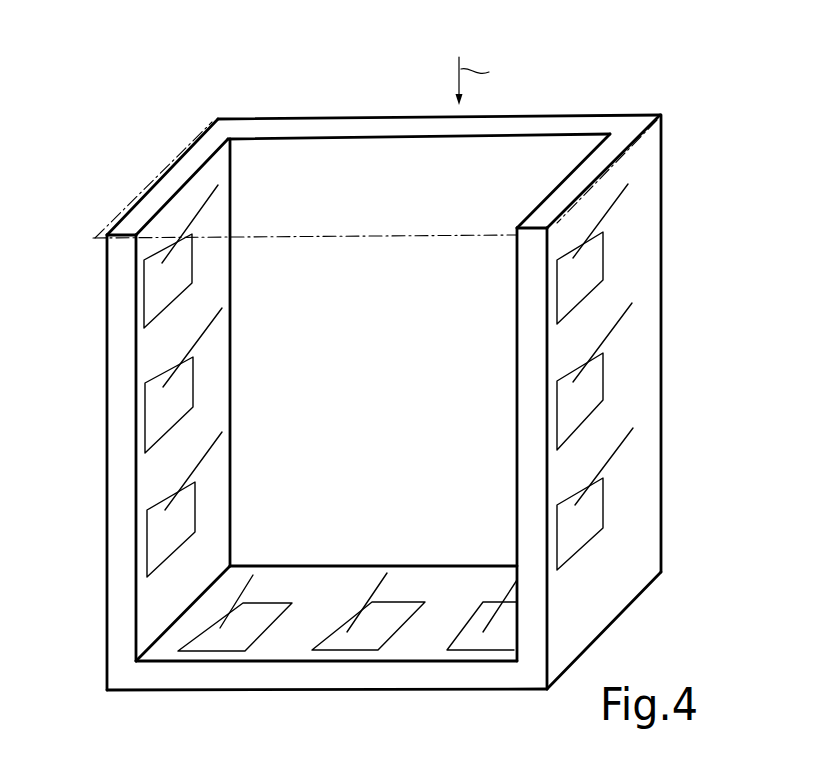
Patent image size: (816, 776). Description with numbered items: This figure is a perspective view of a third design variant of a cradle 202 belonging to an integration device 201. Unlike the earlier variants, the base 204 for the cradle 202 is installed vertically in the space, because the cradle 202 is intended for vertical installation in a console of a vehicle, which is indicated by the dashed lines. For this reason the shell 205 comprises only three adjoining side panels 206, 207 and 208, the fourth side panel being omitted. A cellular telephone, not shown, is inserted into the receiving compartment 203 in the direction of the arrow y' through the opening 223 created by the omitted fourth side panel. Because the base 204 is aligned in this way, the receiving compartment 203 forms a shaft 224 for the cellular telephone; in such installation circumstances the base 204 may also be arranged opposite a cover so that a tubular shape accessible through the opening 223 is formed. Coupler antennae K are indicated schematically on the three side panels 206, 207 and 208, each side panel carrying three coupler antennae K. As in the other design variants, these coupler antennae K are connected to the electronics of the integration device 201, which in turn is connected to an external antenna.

The integration device 201 is at (382, 381).
The cradle 202 is at (383, 293).
The receiving compartment 203 is at (376, 372).
The base 204 is at (378, 145).
The shell 205 is at (117, 288).
The side panel 206 is at (118, 337).
The side panel 207 is at (410, 673).
The side panel 208 is at (627, 557).
The opening 223 is at (206, 313).
The shaft 224 is at (413, 314).
The coupler antennae K is at (356, 459).